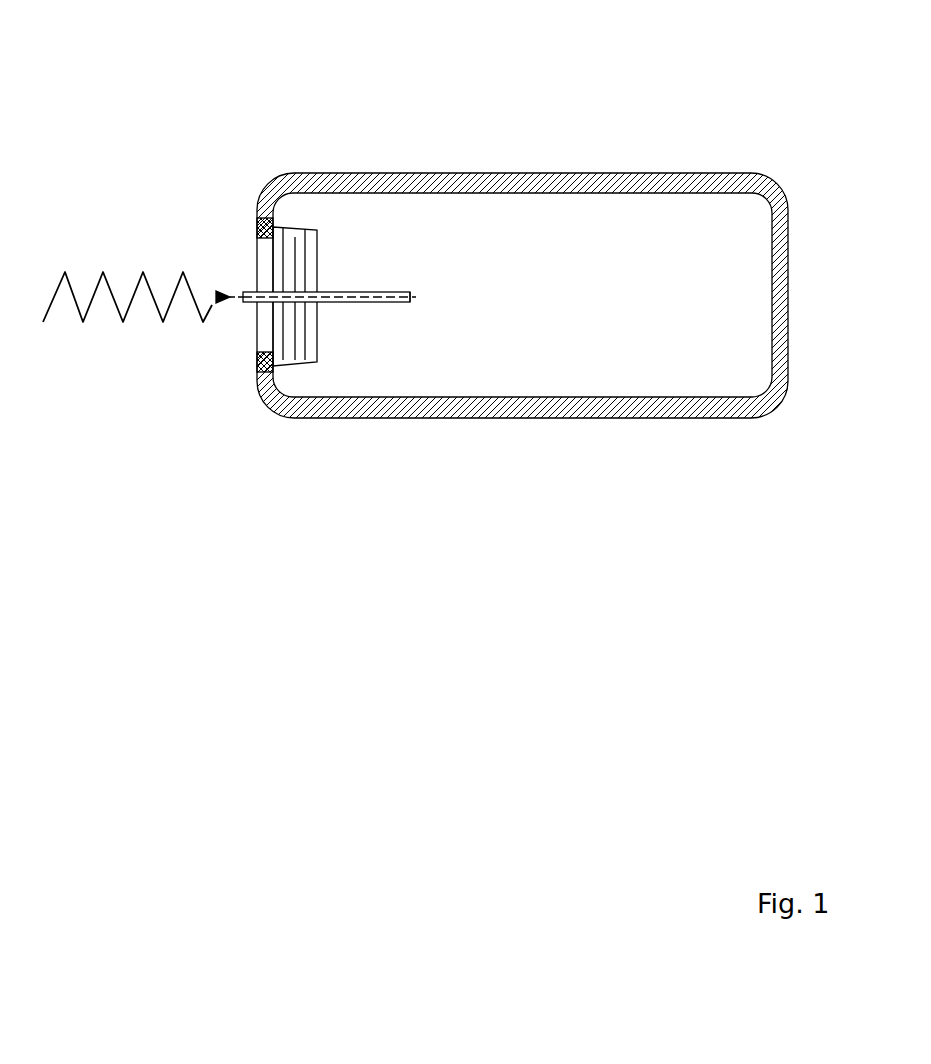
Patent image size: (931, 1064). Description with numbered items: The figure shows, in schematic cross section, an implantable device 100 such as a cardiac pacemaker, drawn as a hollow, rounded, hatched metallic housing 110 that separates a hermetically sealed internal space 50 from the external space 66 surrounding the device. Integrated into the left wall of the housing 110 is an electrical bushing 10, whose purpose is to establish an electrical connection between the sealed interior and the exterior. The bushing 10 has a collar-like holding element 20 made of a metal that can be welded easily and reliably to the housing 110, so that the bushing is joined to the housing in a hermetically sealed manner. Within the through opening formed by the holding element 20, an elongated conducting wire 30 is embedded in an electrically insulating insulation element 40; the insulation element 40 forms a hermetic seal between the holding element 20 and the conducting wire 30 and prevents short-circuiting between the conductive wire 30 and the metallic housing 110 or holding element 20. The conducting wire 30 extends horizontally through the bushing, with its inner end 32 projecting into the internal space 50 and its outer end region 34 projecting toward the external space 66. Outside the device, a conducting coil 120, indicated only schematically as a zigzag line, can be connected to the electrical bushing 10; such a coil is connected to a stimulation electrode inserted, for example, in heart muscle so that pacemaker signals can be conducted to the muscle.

The implantable device 100 is at (537, 130).
The housing 110 is at (382, 177).
The holding element 20 is at (257, 220).
The insulation element 40 is at (280, 253).
The electrical bushing 10 is at (328, 263).
The conducting wire 30 is at (367, 302).
The end of the conducting element 32 is at (412, 293).
The rod tip / light entry 34 is at (231, 300).
The internal space 50 is at (603, 317).
The external space 66 is at (690, 128).
The conducting coil 120 is at (120, 322).